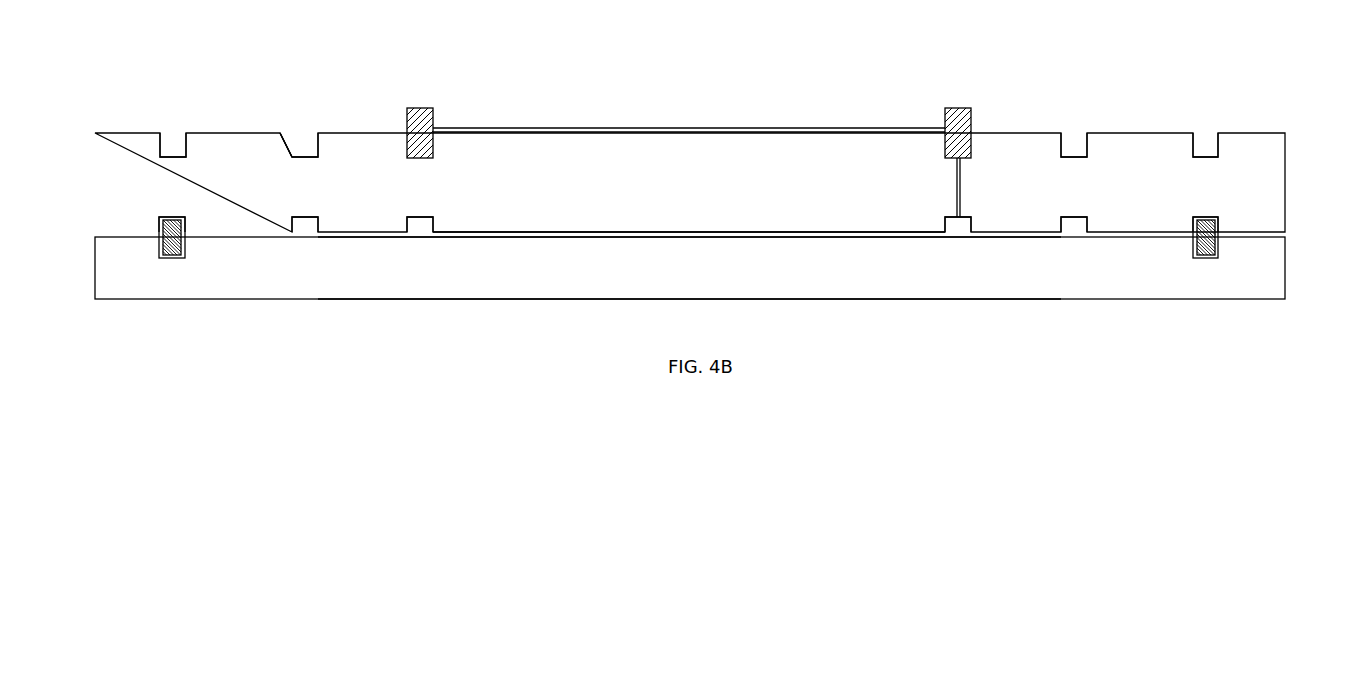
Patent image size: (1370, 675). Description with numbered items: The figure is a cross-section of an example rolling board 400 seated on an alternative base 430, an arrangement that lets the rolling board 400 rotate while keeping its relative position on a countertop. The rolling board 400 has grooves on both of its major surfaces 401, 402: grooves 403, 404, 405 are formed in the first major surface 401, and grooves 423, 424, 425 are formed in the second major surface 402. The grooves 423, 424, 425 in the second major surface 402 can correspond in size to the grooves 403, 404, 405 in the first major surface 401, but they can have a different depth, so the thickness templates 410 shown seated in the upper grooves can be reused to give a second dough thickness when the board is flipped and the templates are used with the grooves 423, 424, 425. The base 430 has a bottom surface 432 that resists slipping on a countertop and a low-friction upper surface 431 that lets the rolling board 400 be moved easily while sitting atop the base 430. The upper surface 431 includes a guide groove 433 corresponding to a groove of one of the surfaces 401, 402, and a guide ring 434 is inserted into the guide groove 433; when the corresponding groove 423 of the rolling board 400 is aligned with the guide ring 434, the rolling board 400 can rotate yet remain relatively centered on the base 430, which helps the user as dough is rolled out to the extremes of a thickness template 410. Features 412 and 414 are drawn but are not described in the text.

The rolling board 400 is at (698, 188).
The first major surface 401 is at (137, 131).
The second major surface 402 is at (618, 231).
The groove 403 is at (174, 123).
The groove 404 is at (307, 123).
The groove 405 is at (434, 174).
The thickness template 410 is at (427, 106).
The top layer 412 is at (568, 126).
The tapered sidewall 414 is at (283, 116).
The groove 423 is at (184, 208).
The groove 424 is at (291, 197).
The groove 425 is at (417, 204).
The base 430 is at (1287, 268).
The upper surface 431 is at (557, 238).
The bottom surface 432 is at (803, 300).
The guide groove 433 is at (175, 262).
The guide ring 434 is at (172, 222).